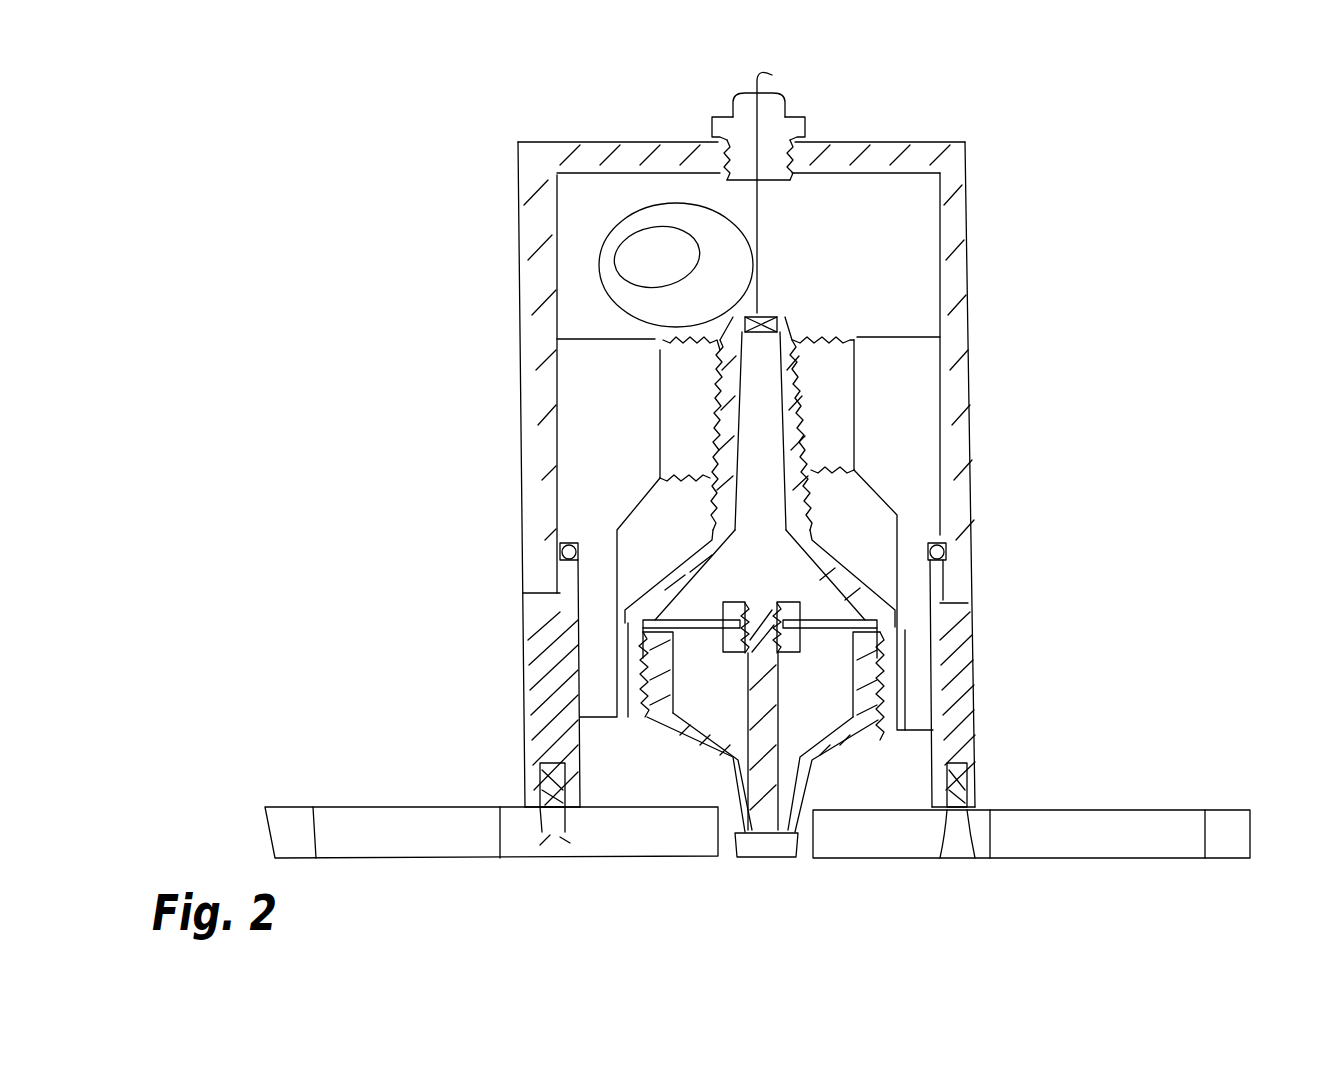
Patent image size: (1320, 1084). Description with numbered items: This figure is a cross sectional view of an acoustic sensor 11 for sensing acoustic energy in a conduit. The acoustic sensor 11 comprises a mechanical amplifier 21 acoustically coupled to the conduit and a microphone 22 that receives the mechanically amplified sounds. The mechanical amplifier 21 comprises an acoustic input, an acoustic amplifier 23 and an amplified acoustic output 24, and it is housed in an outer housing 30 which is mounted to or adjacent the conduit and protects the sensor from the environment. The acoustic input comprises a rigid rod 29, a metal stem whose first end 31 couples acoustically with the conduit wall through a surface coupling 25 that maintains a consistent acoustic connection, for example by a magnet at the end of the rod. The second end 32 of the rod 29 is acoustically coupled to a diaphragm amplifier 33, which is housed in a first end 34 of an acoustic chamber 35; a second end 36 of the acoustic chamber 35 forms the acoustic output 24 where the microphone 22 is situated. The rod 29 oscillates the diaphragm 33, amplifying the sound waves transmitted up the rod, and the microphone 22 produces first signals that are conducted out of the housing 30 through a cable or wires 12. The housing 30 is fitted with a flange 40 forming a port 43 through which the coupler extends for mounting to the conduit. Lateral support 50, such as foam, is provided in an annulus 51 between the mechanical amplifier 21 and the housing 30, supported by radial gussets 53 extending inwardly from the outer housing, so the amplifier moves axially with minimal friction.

The acoustic sensor 11 is at (1025, 140).
The cable or wires 12 is at (760, 238).
The mechanical amplifier 21 is at (864, 583).
The microphone 22 is at (764, 317).
The acoustic amplifier 23 is at (823, 630).
The amplified acoustic output 24 is at (762, 370).
The surface coupling 25 is at (758, 858).
The rigid rod 29 is at (760, 760).
The outer housing 30 is at (535, 173).
The first end of rod 31 is at (763, 793).
The second end of rod 32 is at (763, 660).
The diaphragm amplifier 33 is at (697, 617).
The first end of acoustic chamber 34 is at (703, 583).
The acoustic chamber 35 is at (767, 557).
The second end of acoustic chamber 36 is at (753, 342).
The flange 40 is at (1120, 795).
The port 43 is at (728, 845).
The lateral support 50 is at (827, 389).
The annulus 51 is at (850, 519).
The radial gussets 53 is at (891, 406).